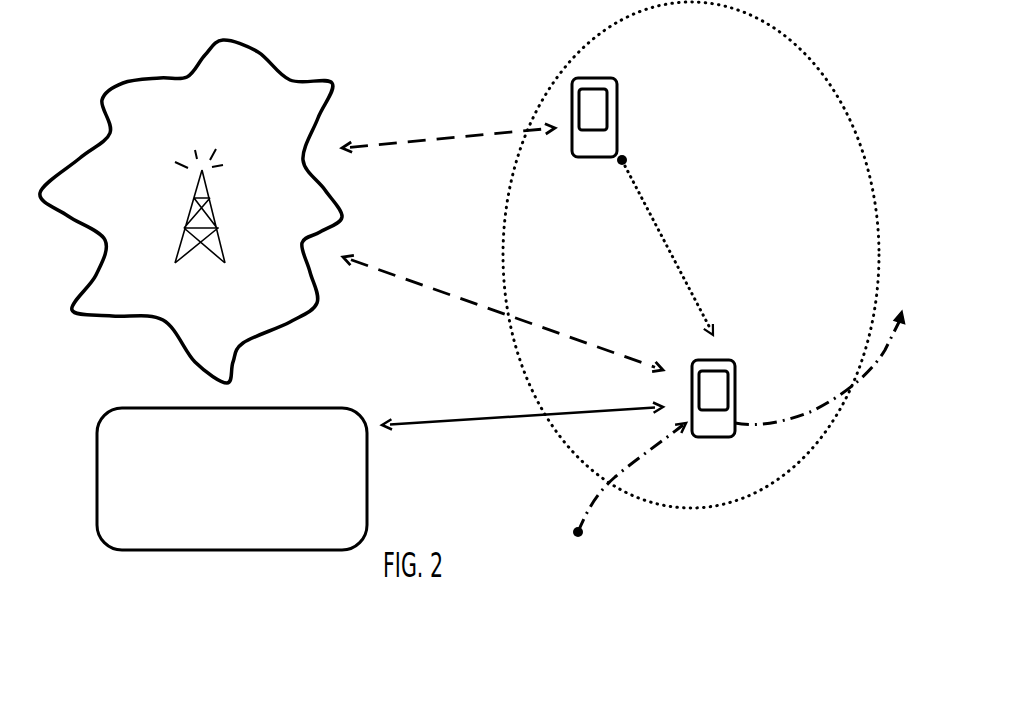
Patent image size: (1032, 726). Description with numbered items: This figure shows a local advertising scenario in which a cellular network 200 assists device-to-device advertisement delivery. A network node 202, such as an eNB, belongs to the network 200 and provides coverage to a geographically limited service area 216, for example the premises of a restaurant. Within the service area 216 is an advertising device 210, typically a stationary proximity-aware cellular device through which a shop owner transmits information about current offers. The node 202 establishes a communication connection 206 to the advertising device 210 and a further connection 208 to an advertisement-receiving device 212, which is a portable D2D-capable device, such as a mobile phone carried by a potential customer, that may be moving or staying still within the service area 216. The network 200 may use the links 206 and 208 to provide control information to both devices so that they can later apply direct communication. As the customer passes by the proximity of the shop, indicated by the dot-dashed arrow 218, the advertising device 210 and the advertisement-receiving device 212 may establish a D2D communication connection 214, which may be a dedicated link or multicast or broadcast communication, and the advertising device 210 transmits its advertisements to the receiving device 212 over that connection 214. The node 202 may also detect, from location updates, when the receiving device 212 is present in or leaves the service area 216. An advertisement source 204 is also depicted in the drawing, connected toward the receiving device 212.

The network 200 is at (191, 211).
The network node 202 is at (180, 232).
The advertisement source 204 is at (232, 479).
The communication connection 206 is at (472, 135).
The connection 208 is at (492, 308).
The advertising device 210 is at (617, 82).
The advertisement-receiving device 212 is at (735, 368).
The D2D communication connection 214 is at (660, 240).
The service area 216 is at (797, 465).
The dot-dashed arrow 218 is at (590, 503).